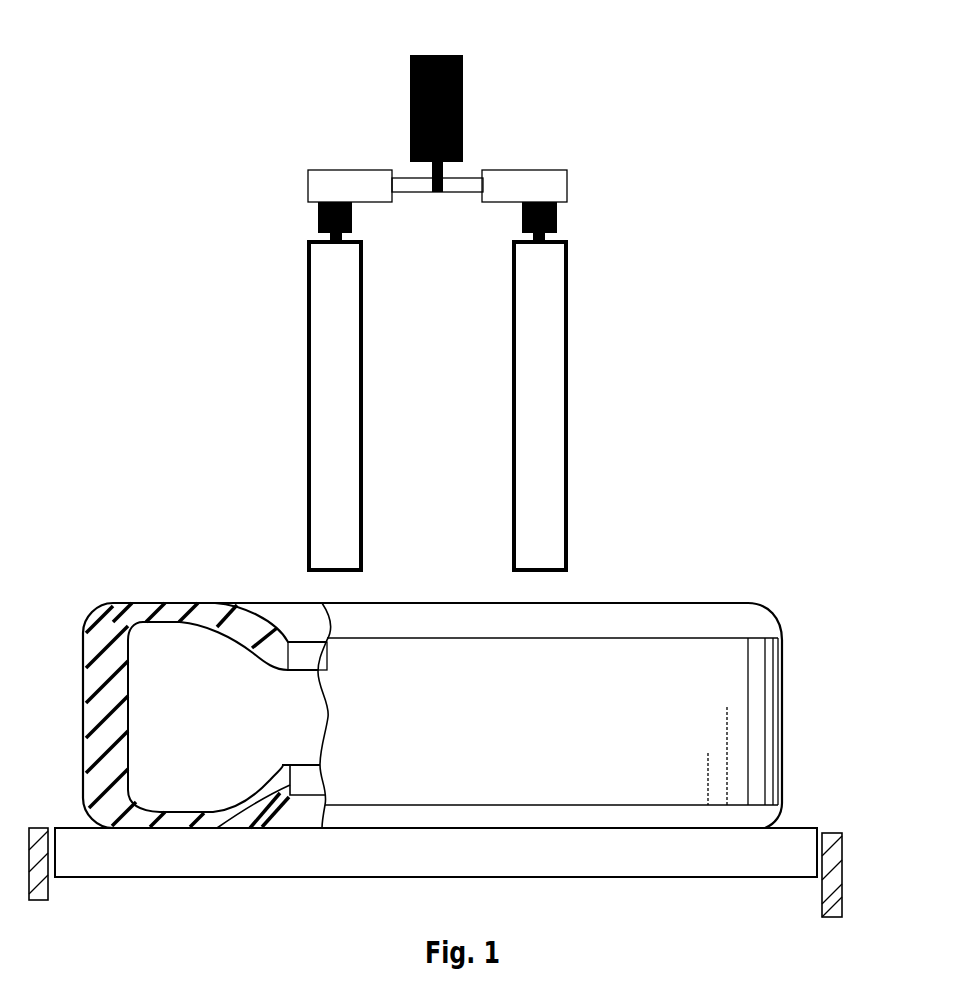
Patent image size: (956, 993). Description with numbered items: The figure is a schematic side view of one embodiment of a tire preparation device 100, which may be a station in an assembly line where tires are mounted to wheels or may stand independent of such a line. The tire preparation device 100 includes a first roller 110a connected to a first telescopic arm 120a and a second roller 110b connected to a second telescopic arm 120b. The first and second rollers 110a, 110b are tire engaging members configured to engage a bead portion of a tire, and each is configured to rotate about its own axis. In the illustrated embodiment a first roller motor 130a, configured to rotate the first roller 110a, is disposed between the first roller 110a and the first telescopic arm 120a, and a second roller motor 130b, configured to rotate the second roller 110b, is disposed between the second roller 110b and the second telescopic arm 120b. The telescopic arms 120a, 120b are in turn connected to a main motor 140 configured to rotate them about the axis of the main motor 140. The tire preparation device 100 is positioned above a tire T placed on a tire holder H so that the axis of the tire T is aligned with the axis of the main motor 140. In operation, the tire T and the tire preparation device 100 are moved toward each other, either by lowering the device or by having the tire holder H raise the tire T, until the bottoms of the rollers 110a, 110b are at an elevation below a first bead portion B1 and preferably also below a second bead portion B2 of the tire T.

The tire preparation device 100 is at (197, 100).
The main motor 140 is at (464, 108).
The first telescopic arm 120a is at (417, 178).
The second telescopic arm 120b is at (462, 178).
The first roller motor 130a is at (317, 215).
The second roller motor 130b is at (557, 215).
The first roller 110a is at (307, 405).
The second roller 110b is at (568, 407).
The tire T is at (732, 578).
The tire holder H is at (805, 823).
The first bead portion B1 is at (270, 652).
The second bead portion B2 is at (287, 783).